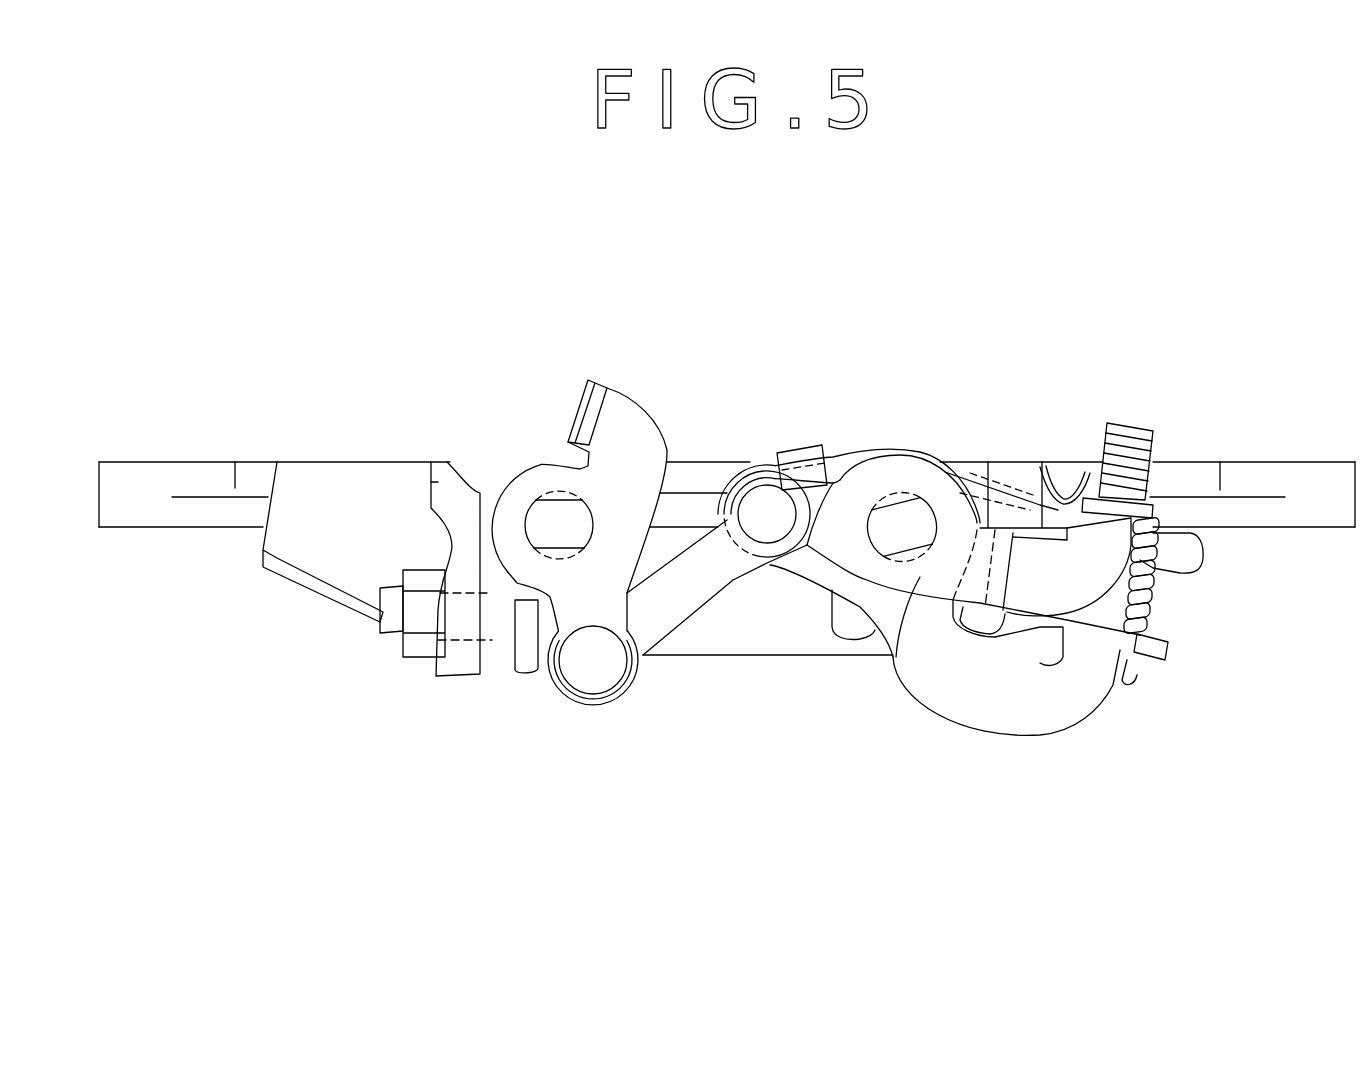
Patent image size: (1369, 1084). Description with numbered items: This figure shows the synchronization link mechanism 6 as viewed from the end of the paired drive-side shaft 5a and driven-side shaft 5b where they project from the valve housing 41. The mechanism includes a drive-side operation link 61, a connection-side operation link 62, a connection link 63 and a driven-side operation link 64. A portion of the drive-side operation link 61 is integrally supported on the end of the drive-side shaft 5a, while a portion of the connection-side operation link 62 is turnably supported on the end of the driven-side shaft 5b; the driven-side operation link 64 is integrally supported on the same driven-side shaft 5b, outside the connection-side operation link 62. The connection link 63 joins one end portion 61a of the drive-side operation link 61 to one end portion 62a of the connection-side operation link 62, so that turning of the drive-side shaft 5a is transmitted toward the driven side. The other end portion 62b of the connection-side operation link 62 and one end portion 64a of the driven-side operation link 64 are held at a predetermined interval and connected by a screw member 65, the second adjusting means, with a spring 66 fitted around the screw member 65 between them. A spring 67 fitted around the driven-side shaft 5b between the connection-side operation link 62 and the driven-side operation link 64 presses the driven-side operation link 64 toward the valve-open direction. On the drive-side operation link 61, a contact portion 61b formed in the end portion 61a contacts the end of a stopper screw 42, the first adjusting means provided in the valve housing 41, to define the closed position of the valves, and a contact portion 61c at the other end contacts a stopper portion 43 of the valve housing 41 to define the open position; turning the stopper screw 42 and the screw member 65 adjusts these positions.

The valve housing 41 is at (145, 515).
The stopper screw 42 is at (503, 640).
The stopper portion 43 is at (425, 468).
The drive-side shaft 5a is at (553, 493).
The driven-side shaft 5b is at (902, 490).
The synchronization link mechanism 6 is at (629, 716).
The drive-side operation link 61 is at (590, 574).
The one end portion of the drive-side operation link 61a is at (588, 706).
The contact portion 61b is at (527, 663).
The contact portion 61c is at (588, 393).
The connection-side operation link 62 is at (964, 578).
The one end portion of the connection-side operation link 62a is at (798, 567).
The other end portion of the connection-side operation link 62b is at (1150, 660).
The connection link 63 is at (687, 593).
The driven-side operation link 64 is at (1078, 650).
The one end portion of the driven-side operation link 64a is at (1157, 533).
The screw member 65 is at (1127, 447).
The spring 66 is at (1148, 613).
The spring 67 is at (927, 450).